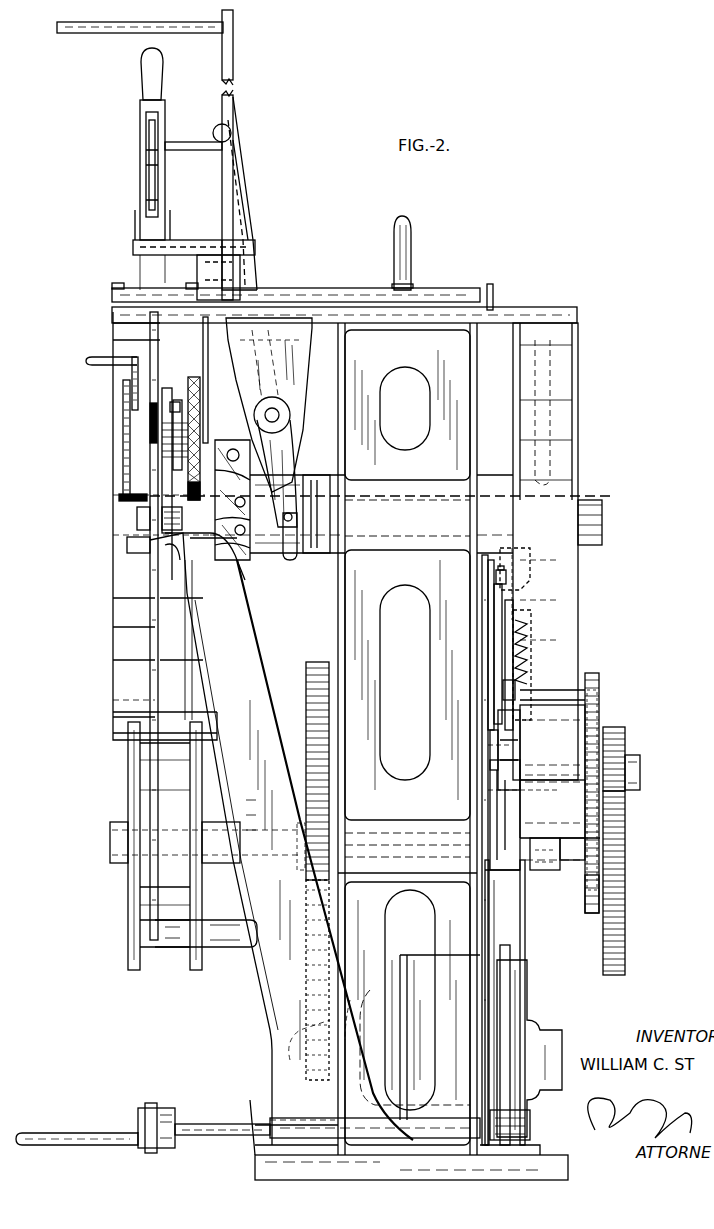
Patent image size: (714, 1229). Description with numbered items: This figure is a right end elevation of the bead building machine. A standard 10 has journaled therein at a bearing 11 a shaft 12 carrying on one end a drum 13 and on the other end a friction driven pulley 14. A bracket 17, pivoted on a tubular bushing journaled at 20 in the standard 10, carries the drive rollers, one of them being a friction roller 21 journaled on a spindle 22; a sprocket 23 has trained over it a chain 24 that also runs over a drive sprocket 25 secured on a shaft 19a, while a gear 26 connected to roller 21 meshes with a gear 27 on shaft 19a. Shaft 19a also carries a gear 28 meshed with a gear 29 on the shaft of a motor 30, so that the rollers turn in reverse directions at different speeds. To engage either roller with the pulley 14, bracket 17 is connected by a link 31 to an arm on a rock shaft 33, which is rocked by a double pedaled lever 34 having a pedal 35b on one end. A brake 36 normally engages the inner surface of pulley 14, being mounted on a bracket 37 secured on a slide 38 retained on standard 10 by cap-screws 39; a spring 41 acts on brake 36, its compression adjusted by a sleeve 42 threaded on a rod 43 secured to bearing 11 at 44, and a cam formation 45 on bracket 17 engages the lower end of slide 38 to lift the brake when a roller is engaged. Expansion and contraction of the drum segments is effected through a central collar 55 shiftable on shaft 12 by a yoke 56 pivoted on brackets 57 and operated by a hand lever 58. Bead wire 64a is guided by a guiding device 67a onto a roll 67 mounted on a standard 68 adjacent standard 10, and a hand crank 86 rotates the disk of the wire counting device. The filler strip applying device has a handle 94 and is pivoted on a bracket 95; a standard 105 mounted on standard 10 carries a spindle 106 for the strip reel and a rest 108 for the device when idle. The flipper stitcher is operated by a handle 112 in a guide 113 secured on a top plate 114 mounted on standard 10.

The standard 10 is at (360, 580).
The bearing 11 is at (430, 490).
The shaft 12 is at (342, 490).
The drum 13 is at (118, 462).
The friction driven pulley 14 is at (570, 440).
The bracket 17 is at (520, 725).
The shaft 19a is at (497, 912).
The journal 20 is at (420, 830).
The friction roller 21 is at (570, 728).
The spindle 22 is at (640, 767).
The sprocket 23 is at (592, 700).
The chain 24 is at (594, 680).
The drive sprocket 25 is at (590, 888).
The gear 26 is at (616, 740).
The gear 27 is at (624, 928).
The gear 28 is at (308, 690).
The gear 29 is at (303, 1040).
The motor 30 is at (430, 975).
The link 31 is at (524, 984).
The rock shaft 33 is at (445, 1132).
The double pedaled lever 34 is at (160, 1110).
The pedal 35b is at (72, 1132).
The brake 36 is at (520, 686).
The bracket 37 is at (500, 625).
The slide 38 is at (490, 607).
The cap-screws 39 is at (501, 570).
The spring 41 is at (518, 648).
The sleeve 42 is at (490, 580).
The rod 43 is at (510, 548).
The securing point 44 is at (585, 520).
The cam formation 45 is at (495, 855).
The central collar 55 is at (282, 550).
The yoke 56 is at (288, 444).
The brackets 57 is at (290, 377).
The hand lever 58 is at (243, 194).
The bead wire 64a is at (148, 676).
The roll 67 is at (135, 912).
The guiding device 67a is at (218, 948).
The standard 68 is at (243, 645).
The hand crank 86 is at (105, 355).
The handle 94 is at (143, 72).
The bracket 95 is at (222, 300).
The standard 105 is at (234, 110).
The spindle 106 is at (120, 34).
The rest 108 is at (185, 140).
The handle 112 is at (412, 242).
The guide 113 is at (450, 300).
The top plate 114 is at (500, 318).